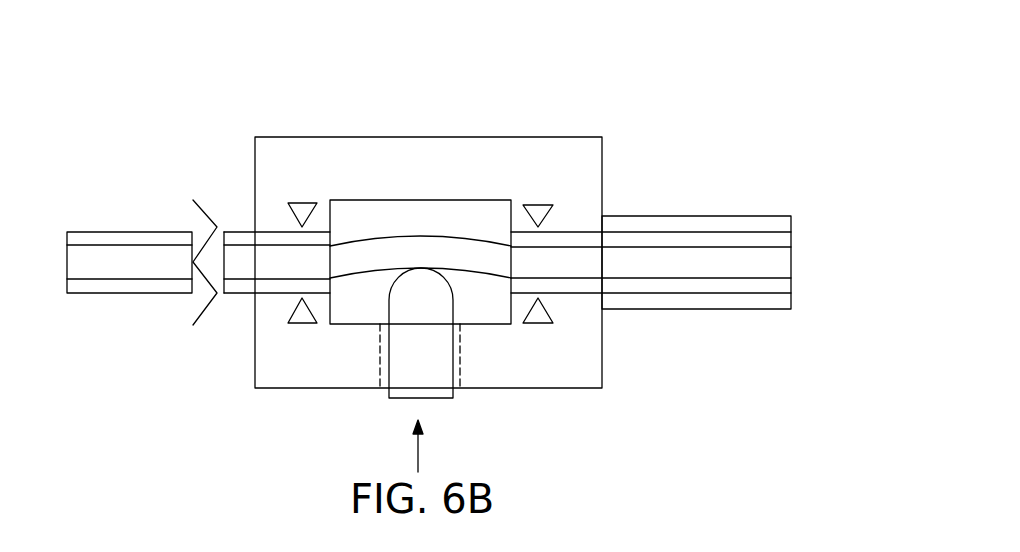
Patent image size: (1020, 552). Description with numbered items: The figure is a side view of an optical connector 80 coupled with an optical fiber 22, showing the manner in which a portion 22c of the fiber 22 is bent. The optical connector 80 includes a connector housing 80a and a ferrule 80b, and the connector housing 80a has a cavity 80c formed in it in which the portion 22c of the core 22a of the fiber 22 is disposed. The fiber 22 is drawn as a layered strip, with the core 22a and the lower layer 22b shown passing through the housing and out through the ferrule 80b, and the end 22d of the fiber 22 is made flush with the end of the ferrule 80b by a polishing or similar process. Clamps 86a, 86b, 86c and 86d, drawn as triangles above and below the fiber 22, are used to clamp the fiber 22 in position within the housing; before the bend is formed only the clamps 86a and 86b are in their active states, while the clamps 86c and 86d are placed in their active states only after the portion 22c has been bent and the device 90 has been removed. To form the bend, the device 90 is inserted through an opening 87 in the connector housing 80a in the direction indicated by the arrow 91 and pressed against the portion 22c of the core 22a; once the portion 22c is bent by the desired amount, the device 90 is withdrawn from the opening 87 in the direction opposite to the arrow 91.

The optical connector 80 is at (694, 102).
The connector housing 80a is at (508, 137).
The ferrule 80b is at (673, 216).
The cavity 80c is at (380, 200).
The optical fiber 22 is at (459, 258).
The core 22a is at (278, 257).
The lower wall 22b is at (263, 287).
The portion 22c is at (420, 237).
The end 22d is at (791, 263).
The clamp 86a is at (538, 205).
The clamp 86b is at (538, 323).
The clamp 86c is at (302, 203).
The clamp 86d is at (302, 323).
The opening 87 is at (381, 390).
The device 90 is at (422, 400).
The arrow 91 is at (418, 455).